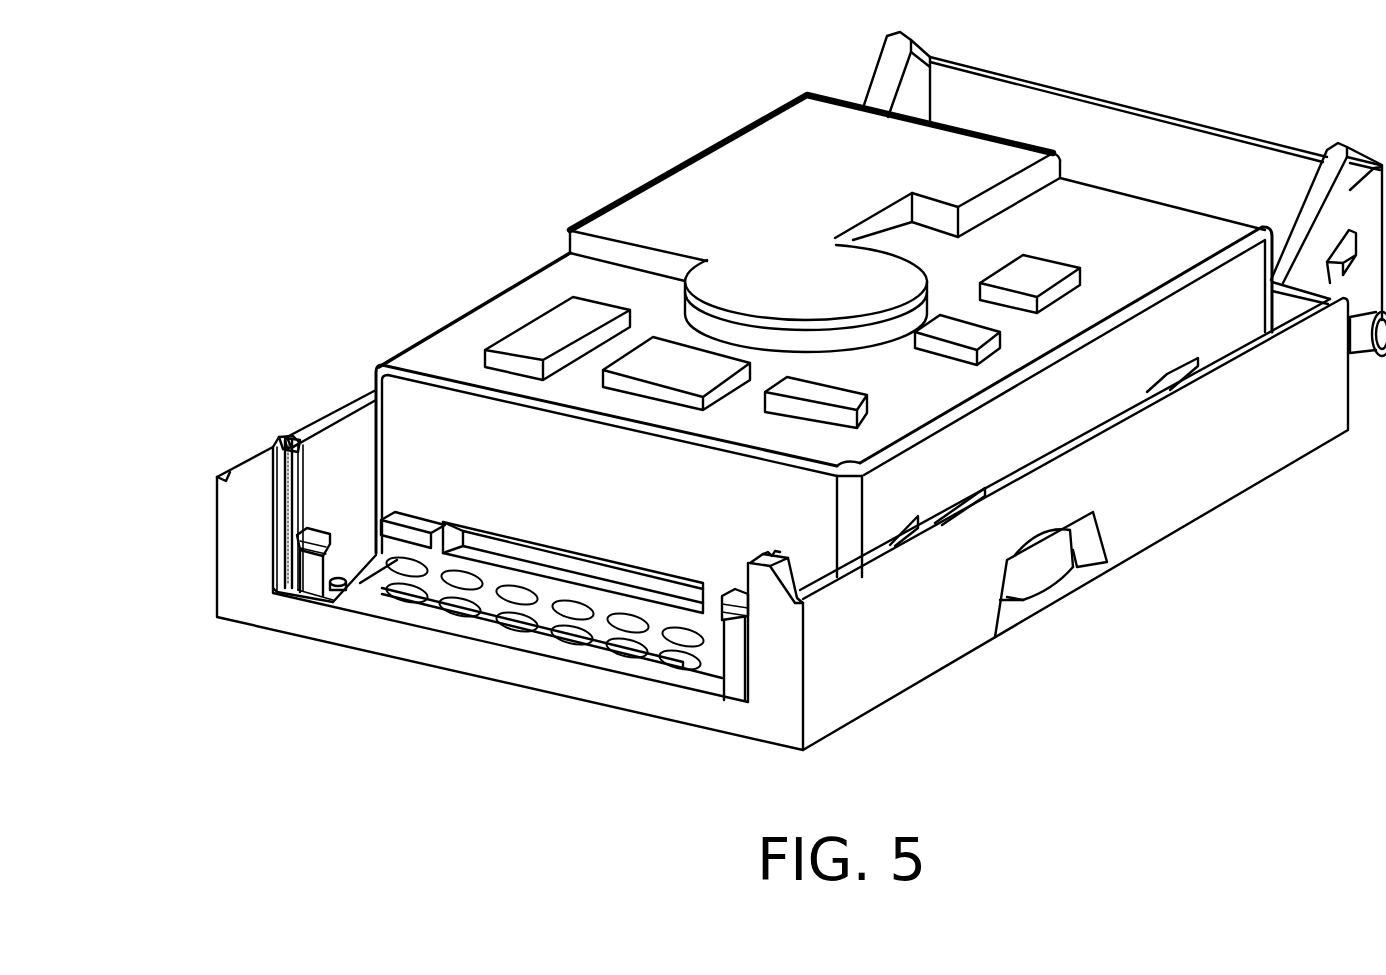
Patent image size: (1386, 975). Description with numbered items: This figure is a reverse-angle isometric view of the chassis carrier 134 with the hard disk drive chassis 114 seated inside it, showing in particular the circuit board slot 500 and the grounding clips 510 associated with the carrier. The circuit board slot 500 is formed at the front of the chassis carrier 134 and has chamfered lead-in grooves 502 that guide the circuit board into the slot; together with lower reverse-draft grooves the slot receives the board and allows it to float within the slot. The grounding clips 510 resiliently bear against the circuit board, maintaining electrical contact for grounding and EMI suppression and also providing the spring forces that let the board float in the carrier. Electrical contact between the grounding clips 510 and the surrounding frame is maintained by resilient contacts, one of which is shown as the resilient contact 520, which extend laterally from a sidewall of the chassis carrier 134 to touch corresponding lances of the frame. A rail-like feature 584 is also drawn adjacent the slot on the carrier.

The hard disk drive chassis 114 is at (822, 292).
The chassis carrier 134 is at (1240, 455).
The circuit board slot 500 is at (258, 490).
The chamfered lead-in grooves 502 is at (300, 442).
The grounding clips 510 is at (322, 530).
The resilient contact 520 is at (1042, 570).
The guide rail 584 is at (290, 525).